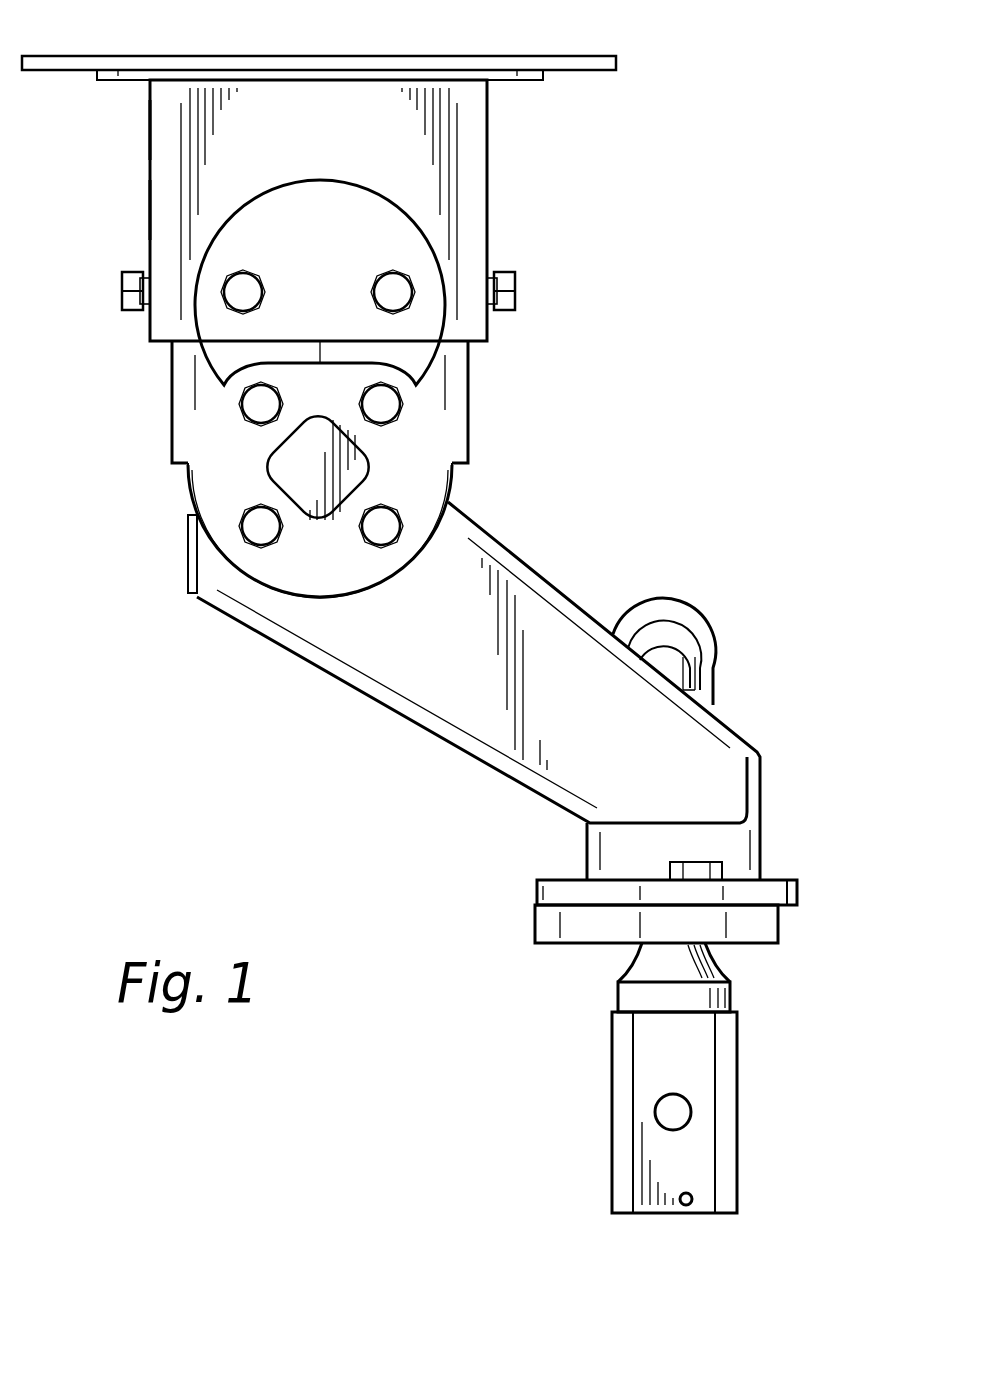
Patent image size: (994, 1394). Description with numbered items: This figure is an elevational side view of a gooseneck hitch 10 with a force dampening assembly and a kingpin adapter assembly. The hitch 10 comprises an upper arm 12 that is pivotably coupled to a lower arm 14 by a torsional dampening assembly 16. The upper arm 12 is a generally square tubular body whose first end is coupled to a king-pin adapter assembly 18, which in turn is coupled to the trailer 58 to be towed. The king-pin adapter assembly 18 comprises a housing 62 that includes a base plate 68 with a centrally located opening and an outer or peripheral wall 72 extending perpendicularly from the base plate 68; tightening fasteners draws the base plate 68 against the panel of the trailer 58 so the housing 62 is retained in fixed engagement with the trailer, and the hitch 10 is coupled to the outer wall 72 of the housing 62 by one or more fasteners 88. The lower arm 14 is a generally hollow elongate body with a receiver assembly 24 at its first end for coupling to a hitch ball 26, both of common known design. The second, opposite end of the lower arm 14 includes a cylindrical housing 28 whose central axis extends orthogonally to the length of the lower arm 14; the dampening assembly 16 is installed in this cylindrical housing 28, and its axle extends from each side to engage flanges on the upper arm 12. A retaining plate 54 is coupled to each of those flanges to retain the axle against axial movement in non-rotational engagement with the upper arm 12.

The gooseneck hitch 10 is at (742, 303).
The upper arm 12 is at (478, 380).
The lower arm 14 is at (570, 595).
The torsional dampening assembly 16 is at (165, 481).
The king-pin adapter assembly 18 is at (518, 172).
The receiver assembly 24 is at (826, 906).
The hitch ball 26 is at (735, 982).
The cylindrical housing 28 is at (460, 492).
The retaining plate 54 is at (215, 490).
The trailer 58 is at (590, 56).
The housing 62 is at (148, 128).
The base plate 68 is at (110, 82).
The outer wall 72 is at (148, 205).
The fasteners 88 is at (377, 277).